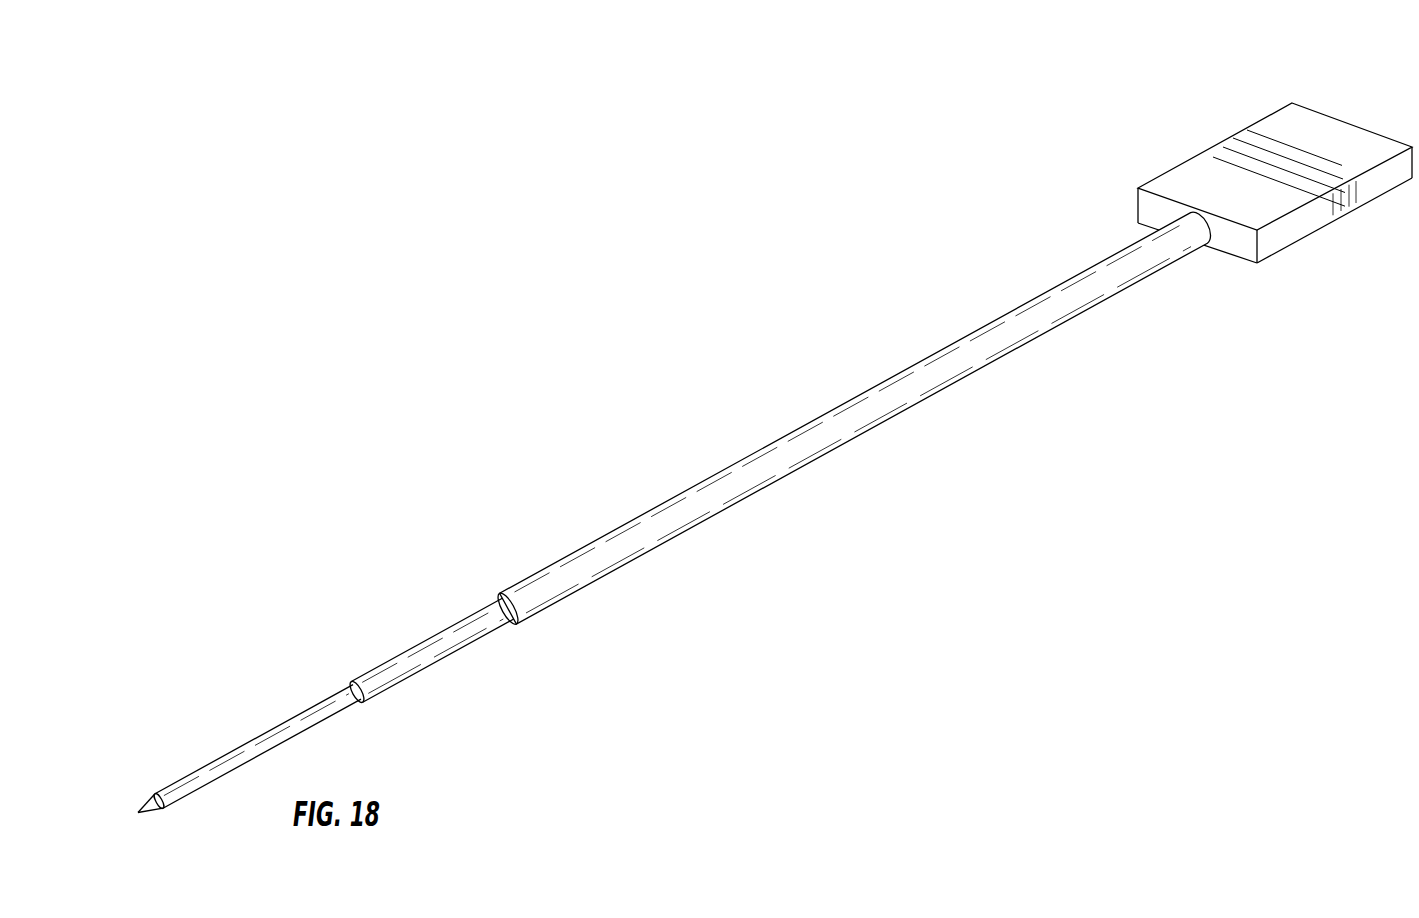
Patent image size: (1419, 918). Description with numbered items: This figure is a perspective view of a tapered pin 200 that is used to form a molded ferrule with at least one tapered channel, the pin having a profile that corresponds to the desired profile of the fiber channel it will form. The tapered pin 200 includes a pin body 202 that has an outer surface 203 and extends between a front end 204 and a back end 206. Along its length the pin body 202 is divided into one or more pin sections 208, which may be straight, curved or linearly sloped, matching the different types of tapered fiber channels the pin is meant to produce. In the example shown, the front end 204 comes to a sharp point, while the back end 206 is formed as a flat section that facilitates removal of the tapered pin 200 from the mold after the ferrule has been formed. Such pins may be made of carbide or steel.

The tapered pin 200 is at (672, 348).
The pin body 202 is at (423, 658).
The outer surface 203 is at (618, 528).
The front end 204 is at (152, 799).
The back end 206 is at (1337, 118).
The pin sections 208 is at (927, 353).